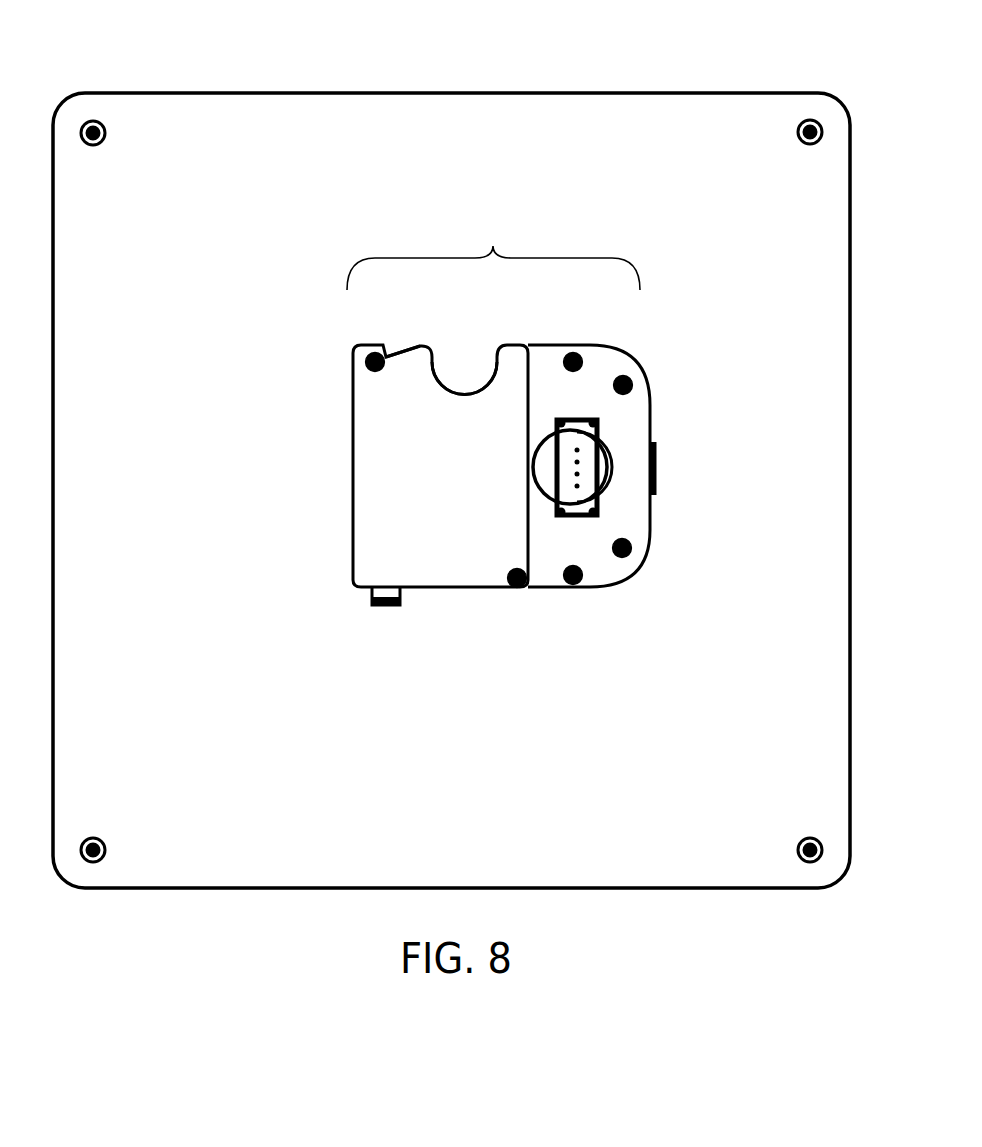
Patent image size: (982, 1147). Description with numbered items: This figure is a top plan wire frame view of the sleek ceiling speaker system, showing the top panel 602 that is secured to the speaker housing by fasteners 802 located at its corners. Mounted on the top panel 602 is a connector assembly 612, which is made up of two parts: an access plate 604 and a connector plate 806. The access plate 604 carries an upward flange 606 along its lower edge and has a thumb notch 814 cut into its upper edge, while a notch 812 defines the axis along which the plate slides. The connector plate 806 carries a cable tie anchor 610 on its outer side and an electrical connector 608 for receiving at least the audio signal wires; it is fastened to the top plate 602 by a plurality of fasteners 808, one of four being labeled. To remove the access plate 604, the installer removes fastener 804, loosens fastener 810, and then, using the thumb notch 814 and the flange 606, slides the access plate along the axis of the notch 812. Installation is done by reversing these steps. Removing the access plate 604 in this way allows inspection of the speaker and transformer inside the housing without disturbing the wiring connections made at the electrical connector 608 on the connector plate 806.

The top panel 602 is at (316, 113).
The access plate 604 is at (371, 417).
The upward flange 606 is at (380, 607).
The electrical connector 608 is at (598, 442).
The cable tie anchor 610 is at (660, 472).
The connector assembly 612 is at (493, 246).
The fasteners 802 is at (805, 120).
The fastener 804 is at (510, 590).
The connector plate 806 is at (607, 362).
The fasteners 808 is at (630, 550).
The fastener 810 is at (372, 350).
The notch 812 is at (397, 338).
The thumb notch 814 is at (461, 375).